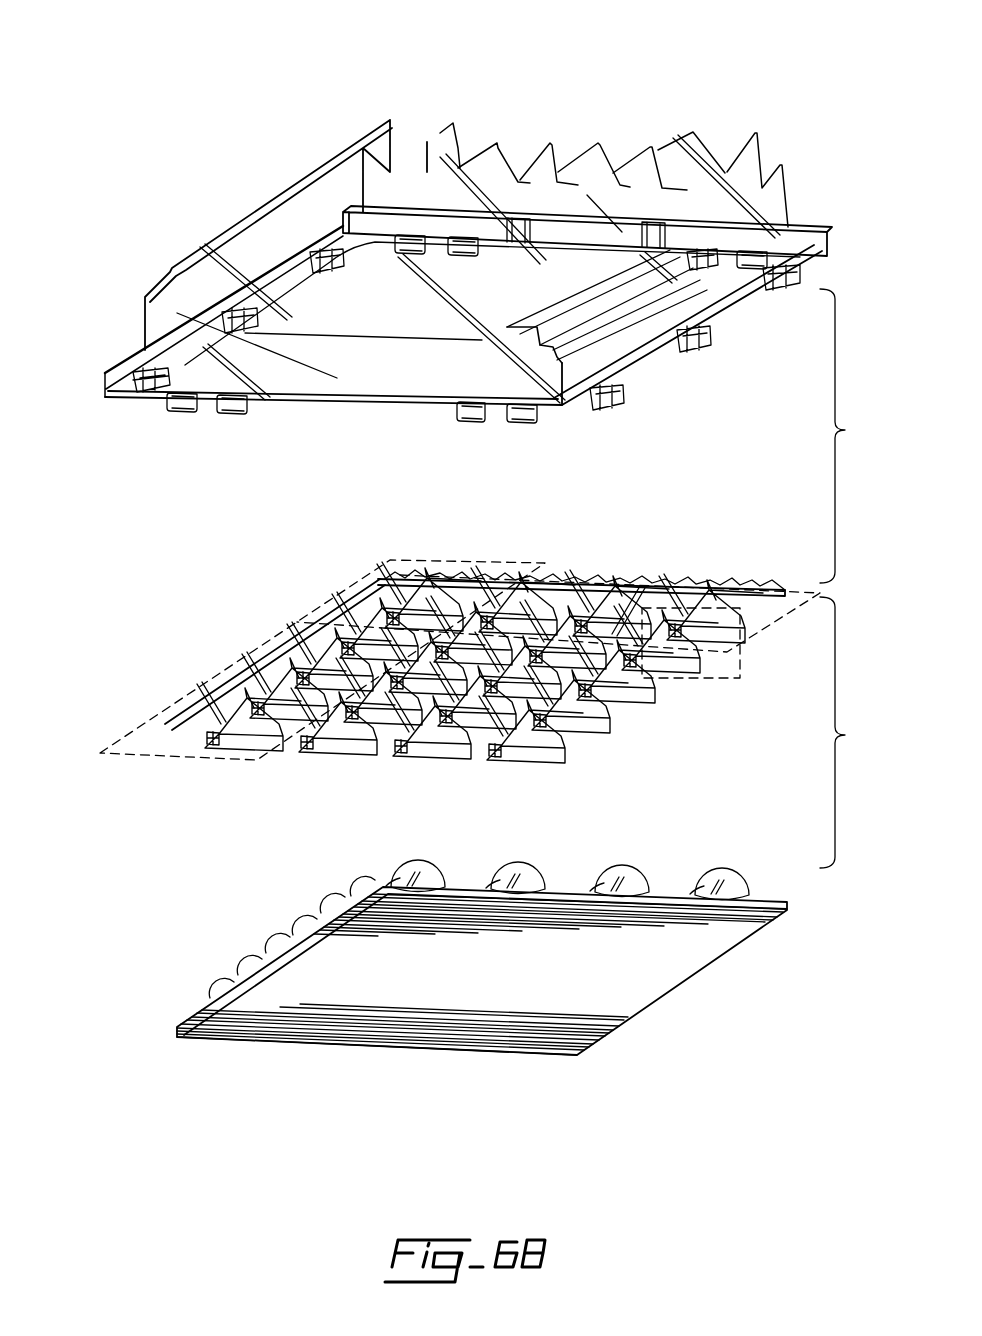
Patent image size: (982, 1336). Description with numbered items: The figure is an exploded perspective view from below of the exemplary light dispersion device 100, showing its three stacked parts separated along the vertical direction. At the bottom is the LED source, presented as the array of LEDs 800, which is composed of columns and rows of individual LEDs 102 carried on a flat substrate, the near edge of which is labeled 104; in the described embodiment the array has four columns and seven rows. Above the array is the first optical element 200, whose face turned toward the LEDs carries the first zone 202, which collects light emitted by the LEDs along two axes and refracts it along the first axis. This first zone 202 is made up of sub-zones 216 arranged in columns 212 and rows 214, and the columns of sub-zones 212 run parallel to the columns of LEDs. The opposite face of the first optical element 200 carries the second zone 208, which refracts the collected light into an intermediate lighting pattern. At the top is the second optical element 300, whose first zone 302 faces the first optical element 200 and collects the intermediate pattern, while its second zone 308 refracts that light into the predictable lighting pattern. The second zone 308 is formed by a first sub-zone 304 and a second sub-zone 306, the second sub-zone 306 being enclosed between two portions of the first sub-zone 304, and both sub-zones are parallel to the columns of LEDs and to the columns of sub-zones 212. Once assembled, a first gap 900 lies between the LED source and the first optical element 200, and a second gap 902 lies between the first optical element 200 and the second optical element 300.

The light dispersion device 100 is at (800, 917).
The LEDs 102 is at (713, 880).
The substrate edge 104 is at (217, 1033).
The first optical element 200 is at (175, 647).
The first zone 202 is at (762, 630).
The second zone 208 is at (733, 580).
The columns of sub-zones 212 is at (210, 760).
The rows of sub-zones 214 is at (643, 574).
The sub-zones 216 is at (700, 680).
The second optical element 300 is at (128, 272).
The first zone 302 is at (580, 350).
The first sub-zone 304 is at (468, 119).
The second sub-zone 306 is at (362, 116).
The second zone 308 is at (303, 178).
The array of LEDs 800 is at (193, 967).
The first gap 900 is at (855, 732).
The second gap 902 is at (855, 436).